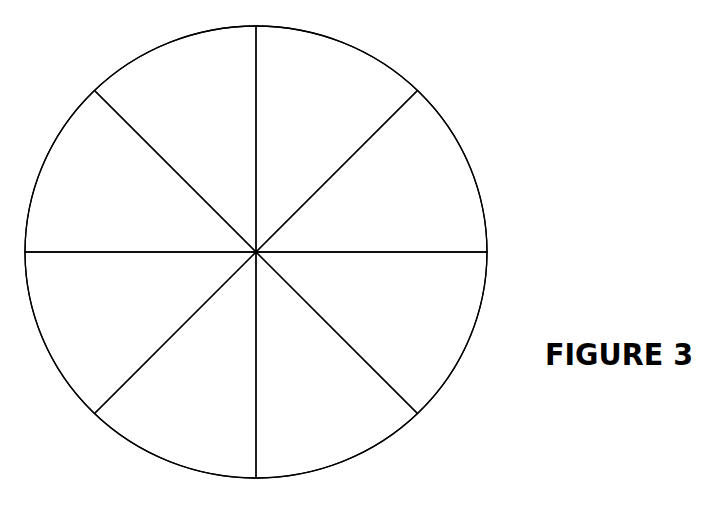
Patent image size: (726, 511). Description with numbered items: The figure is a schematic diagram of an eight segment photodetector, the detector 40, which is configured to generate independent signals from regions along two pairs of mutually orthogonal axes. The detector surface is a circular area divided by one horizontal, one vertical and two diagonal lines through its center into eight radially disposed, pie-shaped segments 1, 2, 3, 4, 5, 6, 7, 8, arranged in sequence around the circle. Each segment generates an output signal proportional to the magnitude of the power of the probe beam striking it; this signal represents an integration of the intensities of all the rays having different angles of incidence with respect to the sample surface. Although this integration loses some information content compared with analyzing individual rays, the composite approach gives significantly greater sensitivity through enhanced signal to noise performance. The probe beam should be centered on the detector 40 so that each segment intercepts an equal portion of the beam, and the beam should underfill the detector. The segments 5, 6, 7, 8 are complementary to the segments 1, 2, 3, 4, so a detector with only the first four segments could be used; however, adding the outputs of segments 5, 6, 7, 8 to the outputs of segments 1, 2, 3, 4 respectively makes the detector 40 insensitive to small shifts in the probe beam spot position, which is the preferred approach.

The detector 40 is at (484, 211).
The segment 1 is at (337, 139).
The segment 2 is at (371, 172).
The segment 3 is at (371, 333).
The segment 4 is at (337, 365).
The segment 5 is at (176, 365).
The segment 6 is at (140, 333).
The segment 7 is at (140, 172).
The segment 8 is at (176, 139).